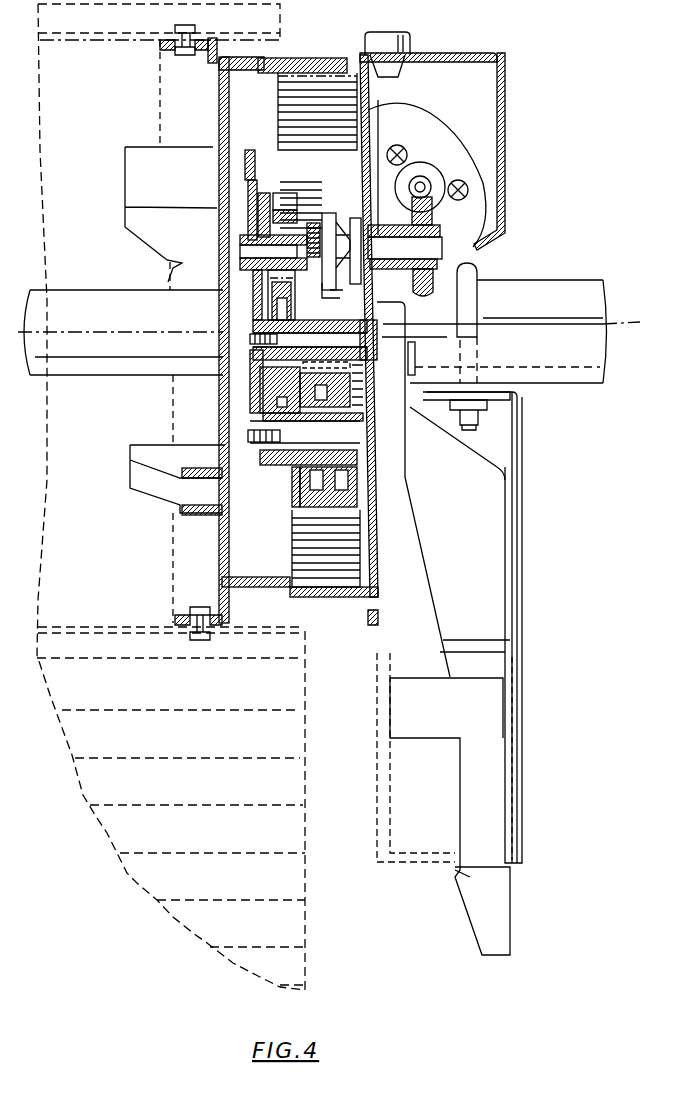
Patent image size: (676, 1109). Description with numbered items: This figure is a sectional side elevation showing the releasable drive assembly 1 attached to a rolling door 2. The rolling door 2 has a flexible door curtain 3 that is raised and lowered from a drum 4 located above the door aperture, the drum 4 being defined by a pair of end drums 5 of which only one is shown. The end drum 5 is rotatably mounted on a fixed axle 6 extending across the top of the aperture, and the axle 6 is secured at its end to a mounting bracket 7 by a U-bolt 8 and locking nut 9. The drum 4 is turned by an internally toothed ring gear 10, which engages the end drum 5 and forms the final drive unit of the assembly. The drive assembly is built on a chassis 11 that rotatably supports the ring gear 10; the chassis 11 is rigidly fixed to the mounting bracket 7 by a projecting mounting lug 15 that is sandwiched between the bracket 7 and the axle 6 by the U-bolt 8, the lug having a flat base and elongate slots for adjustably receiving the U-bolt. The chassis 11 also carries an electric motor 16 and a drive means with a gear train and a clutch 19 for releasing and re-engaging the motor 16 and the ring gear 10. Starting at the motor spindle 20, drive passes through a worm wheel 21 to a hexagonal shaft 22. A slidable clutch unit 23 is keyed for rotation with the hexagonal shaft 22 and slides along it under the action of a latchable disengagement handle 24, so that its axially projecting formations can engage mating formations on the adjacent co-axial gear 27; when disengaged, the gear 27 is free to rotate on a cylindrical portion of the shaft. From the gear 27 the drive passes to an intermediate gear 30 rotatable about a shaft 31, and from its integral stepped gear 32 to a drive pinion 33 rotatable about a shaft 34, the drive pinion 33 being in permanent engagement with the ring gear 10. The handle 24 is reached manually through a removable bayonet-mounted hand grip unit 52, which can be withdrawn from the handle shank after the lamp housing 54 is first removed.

The releasable drive assembly 1 is at (513, 70).
The rolling door 2 is at (112, 791).
The flexible door curtain 3 is at (155, 880).
The drum 4 is at (195, 565).
The end drum 5 is at (180, 540).
The fixed axle 6 is at (83, 312).
The mounting bracket 7 is at (502, 458).
The U-bolt 8 is at (470, 277).
The locking nut 9 is at (483, 415).
The ring gear 10 is at (152, 175).
The chassis 11 is at (383, 118).
The mounting lug 15 is at (585, 375).
The electric motor 16 is at (470, 140).
The clutch 19 is at (305, 215).
The motor spindle 20 is at (430, 190).
The worm wheel 21 is at (440, 222).
The hexagonal shaft 22 is at (440, 262).
The slidable clutch unit 23 is at (335, 218).
The latchable disengagement handle 24 is at (415, 563).
The gear 27 is at (265, 238).
The intermediate gear 30 is at (283, 290).
The shaft 31 is at (300, 345).
The stepped gear 32 is at (355, 362).
The drive pinion 33 is at (318, 490).
The shaft 34 is at (290, 438).
The hand grip unit 52 is at (500, 790).
The lamp housing 54 is at (390, 843).